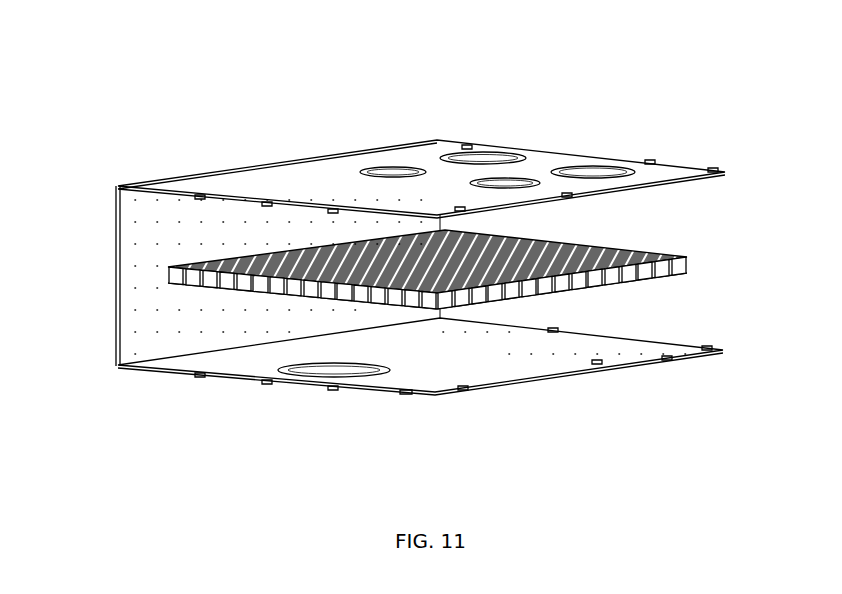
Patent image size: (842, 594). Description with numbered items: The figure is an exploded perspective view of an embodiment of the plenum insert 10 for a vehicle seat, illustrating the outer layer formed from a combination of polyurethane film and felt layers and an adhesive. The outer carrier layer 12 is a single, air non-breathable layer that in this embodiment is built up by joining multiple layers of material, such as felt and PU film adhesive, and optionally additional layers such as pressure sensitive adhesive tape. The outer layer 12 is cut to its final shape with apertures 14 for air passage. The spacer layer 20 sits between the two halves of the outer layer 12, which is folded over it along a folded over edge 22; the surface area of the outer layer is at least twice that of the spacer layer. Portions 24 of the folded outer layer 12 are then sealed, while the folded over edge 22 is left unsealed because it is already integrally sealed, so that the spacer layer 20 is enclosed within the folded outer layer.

The plenum insert 10 is at (371, 84).
The outer carrier layer 12 is at (313, 187).
The apertures 14 is at (469, 160).
The spacer layer 20 is at (668, 255).
The folded over edge 22 is at (137, 265).
The portions of the folded outer layer 24 is at (560, 197).